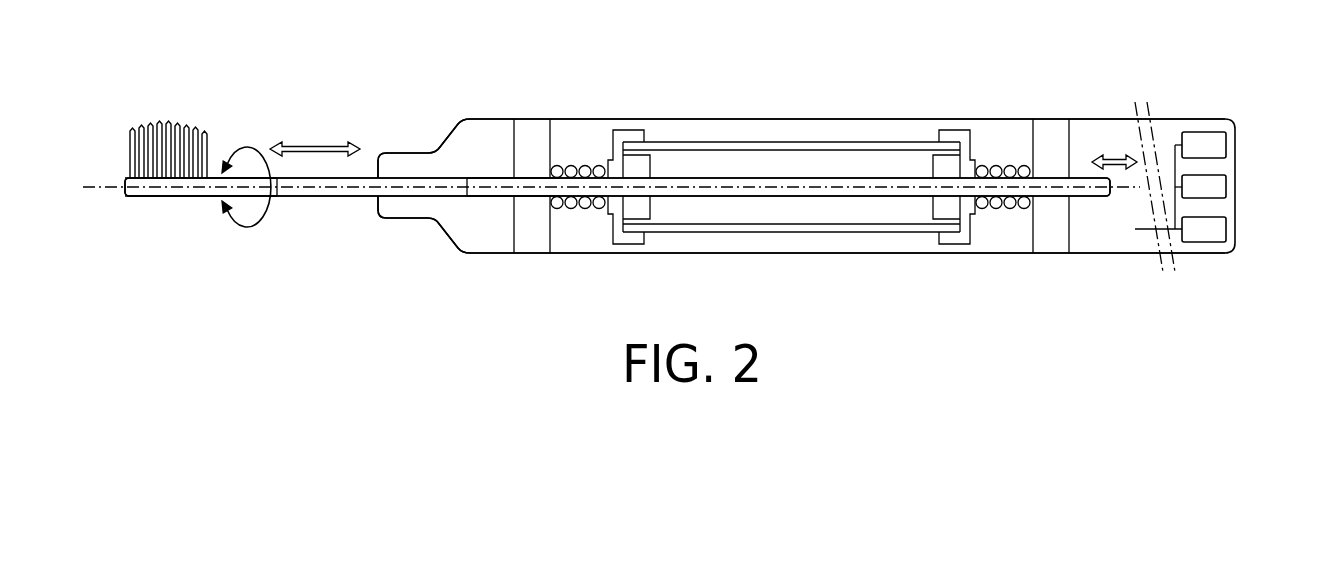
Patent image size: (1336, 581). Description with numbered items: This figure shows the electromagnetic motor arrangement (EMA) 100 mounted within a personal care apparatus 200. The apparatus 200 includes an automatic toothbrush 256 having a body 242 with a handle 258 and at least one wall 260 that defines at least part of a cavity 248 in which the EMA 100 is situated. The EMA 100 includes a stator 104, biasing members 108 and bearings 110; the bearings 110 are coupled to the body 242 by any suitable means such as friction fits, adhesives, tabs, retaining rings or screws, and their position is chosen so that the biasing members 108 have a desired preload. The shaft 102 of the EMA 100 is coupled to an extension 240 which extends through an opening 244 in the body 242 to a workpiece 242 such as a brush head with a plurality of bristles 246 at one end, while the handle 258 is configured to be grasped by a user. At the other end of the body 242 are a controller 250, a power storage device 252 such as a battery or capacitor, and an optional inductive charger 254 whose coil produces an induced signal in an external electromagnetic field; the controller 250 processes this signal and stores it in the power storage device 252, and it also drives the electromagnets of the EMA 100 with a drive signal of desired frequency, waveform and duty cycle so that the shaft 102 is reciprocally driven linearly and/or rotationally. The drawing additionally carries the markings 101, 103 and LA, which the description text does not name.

The personal care apparatus 200 is at (80, 22).
The electromagnetic motor arrangement 100 is at (513, 112).
The rotational motion arrow 101 is at (245, 223).
The shaft 102 is at (490, 200).
The translational motion arrow 103 is at (318, 143).
The stator 104 is at (692, 136).
The biasing members 108 is at (590, 207).
The bearings 110 is at (532, 130).
The extension 240 is at (298, 197).
The body 242 is at (170, 197).
The opening 244 is at (375, 197).
The bristles 246 is at (125, 110).
The cavity 248 is at (455, 228).
The controller 250 is at (1226, 229).
The power storage device 252 is at (1226, 188).
The inductive charger 254 is at (1226, 146).
The automatic toothbrush 256 is at (442, 130).
The handle 258 is at (803, 119).
The wall 260 is at (888, 119).
The longitudinal axis LA is at (90, 193).